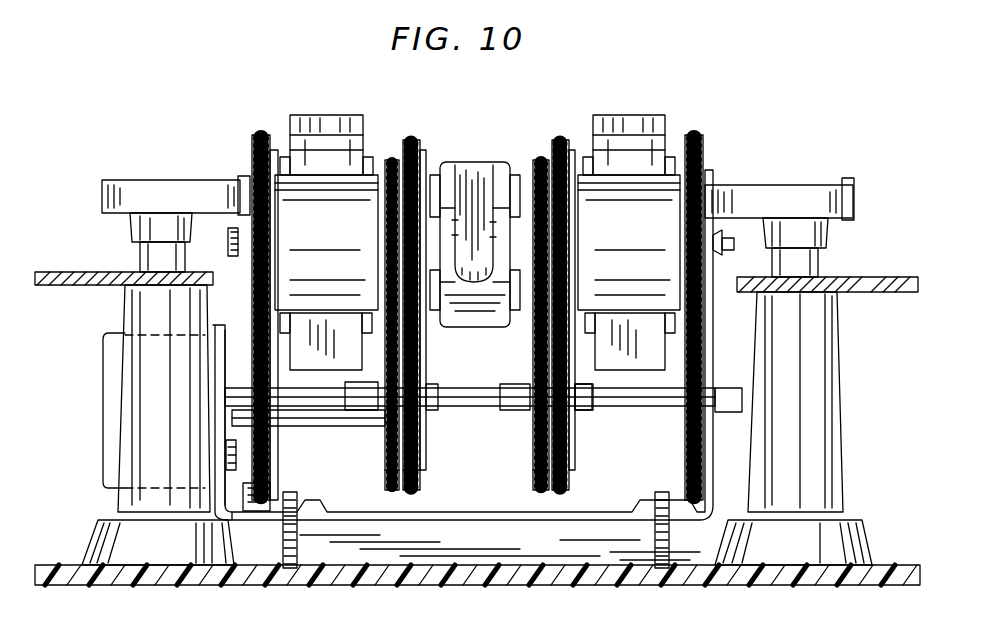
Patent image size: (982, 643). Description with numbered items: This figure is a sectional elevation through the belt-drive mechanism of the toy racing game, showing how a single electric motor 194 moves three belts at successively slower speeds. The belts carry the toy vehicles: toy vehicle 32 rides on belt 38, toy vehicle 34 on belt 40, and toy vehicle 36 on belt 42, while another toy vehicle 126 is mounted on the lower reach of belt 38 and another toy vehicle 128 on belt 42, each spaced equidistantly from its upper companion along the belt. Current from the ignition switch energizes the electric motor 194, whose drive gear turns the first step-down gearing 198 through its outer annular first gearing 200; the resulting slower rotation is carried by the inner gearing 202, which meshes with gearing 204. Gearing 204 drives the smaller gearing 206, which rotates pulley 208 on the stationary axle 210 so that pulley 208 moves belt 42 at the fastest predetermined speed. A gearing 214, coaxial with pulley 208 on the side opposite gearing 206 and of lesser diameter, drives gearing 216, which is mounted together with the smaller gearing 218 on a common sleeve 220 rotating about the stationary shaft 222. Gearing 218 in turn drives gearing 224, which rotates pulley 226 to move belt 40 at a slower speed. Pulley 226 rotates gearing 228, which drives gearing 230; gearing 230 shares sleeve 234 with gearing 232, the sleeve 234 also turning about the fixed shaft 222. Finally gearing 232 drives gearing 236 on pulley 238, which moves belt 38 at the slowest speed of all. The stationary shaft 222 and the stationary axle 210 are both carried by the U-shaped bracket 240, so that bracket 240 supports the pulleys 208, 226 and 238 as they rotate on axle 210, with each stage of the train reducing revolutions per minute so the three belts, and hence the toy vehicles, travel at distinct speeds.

The toy vehicle 32 is at (658, 118).
The toy vehicle 34 is at (483, 190).
The toy vehicle 36 is at (362, 118).
The belt 38 is at (670, 187).
The belt 40 is at (523, 173).
The belt 42 is at (335, 190).
The toy vehicle 126 is at (657, 357).
The toy vehicle 128 is at (315, 368).
The electric motor 194 is at (107, 343).
The first step-down gearing 198 is at (237, 452).
The outer annular first gearing 200 is at (218, 585).
The inner gearing 202 is at (250, 440).
The gearing 204 is at (255, 497).
The gearing 206 is at (262, 135).
The pulley 208 is at (273, 160).
The axle 210 is at (233, 236).
The gearing 214 is at (393, 158).
The gearing 216 is at (393, 488).
The gearing 218 is at (410, 474).
The sleeve 220 is at (438, 413).
The stationary shaft 222 is at (233, 390).
The gearing 224 is at (412, 143).
The pulley 226 is at (424, 170).
The gearing 228 is at (538, 160).
The gearing 230 is at (542, 488).
The gearing 232 is at (563, 473).
The sleeve 234 is at (583, 412).
The gearing 236 is at (560, 160).
The pulley 238 is at (573, 173).
The U-shaped bracket 240 is at (215, 513).